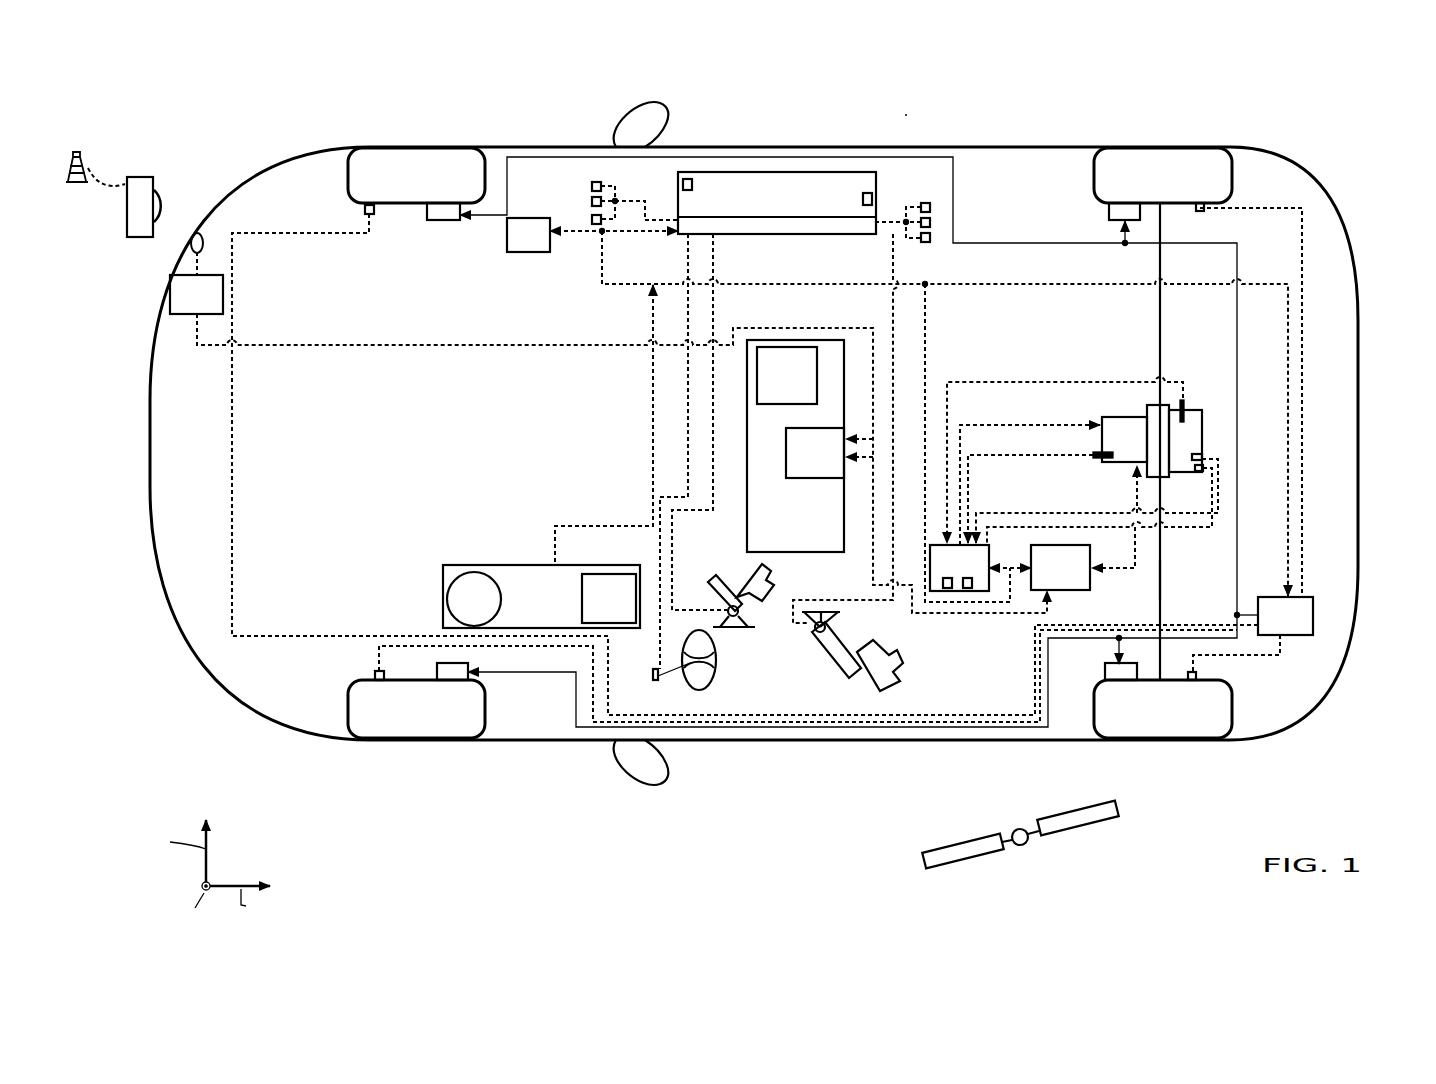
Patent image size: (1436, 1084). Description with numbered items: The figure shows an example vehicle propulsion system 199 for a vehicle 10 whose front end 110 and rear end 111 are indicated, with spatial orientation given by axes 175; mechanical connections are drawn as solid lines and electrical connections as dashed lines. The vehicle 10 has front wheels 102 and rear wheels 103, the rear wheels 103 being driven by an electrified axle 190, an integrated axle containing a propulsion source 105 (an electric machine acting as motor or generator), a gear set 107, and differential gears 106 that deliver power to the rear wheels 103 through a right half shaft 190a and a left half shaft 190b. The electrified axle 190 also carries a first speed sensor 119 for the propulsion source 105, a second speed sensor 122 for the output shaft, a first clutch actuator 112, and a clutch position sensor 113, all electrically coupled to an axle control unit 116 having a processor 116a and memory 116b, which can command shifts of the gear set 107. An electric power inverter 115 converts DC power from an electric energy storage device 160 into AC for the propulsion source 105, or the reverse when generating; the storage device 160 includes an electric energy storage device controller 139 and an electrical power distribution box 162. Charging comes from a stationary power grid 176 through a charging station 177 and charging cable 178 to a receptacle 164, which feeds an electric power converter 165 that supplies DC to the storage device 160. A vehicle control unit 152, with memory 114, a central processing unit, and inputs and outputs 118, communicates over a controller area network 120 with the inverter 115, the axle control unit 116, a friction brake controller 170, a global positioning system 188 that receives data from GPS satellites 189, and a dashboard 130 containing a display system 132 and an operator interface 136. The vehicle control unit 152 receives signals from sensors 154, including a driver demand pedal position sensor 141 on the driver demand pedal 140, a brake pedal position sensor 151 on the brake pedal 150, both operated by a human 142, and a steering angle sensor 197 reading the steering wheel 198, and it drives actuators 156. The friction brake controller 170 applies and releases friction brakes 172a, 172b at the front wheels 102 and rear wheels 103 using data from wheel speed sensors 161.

The vehicle 10 is at (980, 147).
The front wheels 102 is at (420, 157).
The rear wheels 103 is at (1165, 148).
The propulsion source 105 is at (1100, 460).
The differential gears 106 is at (1163, 410).
The gear set 107 is at (1193, 427).
The front end 110 is at (127, 405).
The rear end 111 is at (1408, 178).
The first clutch actuator 112 is at (1200, 471).
The clutch position sensor 113 is at (1199, 452).
The memory 114 is at (680, 181).
The electric power inverter 115 is at (1060, 567).
The axle control unit 116 is at (959, 568).
The processor 116a is at (947, 590).
The memory 116b is at (968, 590).
The inputs and outputs 118 is at (825, 226).
The first speed sensor 119 is at (1128, 465).
The controller area network 120 is at (768, 286).
The second speed sensor 122 is at (1185, 400).
The dashboard 130 is at (462, 565).
The display system 132 is at (474, 599).
The operator interface 136 is at (609, 598).
The electric energy storage device controller 139 is at (787, 375).
The driver demand pedal 140 is at (717, 592).
The driver demand pedal position sensor 141 is at (739, 611).
The human 142 is at (736, 562).
The brake pedal 150 is at (843, 671).
The brake pedal position sensor 151 is at (813, 631).
The vehicle control unit 152 is at (777, 203).
The sensors 154 is at (584, 205).
The actuators 156 is at (937, 228).
The electric energy storage device 160 is at (795, 446).
The wheel speed sensors 161 is at (363, 209).
The electrical power distribution box 162 is at (815, 453).
The receptacle 164 is at (200, 236).
The electric power converter 165 is at (196, 294).
The friction brake controller 170 is at (1285, 616).
The friction brakes 172a is at (435, 221).
The friction brakes 172b is at (1106, 212).
The axes 175 is at (232, 832).
The stationary power grid 176 is at (80, 156).
The charging station 177 is at (145, 177).
The charging cable 178 is at (158, 206).
The global positioning system 188 is at (528, 235).
The GPS satellites 189 is at (1063, 835).
The electrified axle 190 is at (1130, 380).
The right half shaft 190a is at (1162, 338).
The left half shaft 190b is at (1160, 590).
The steering angle sensor 197 is at (652, 676).
The steering wheel 198 is at (710, 676).
The vehicle propulsion system 199 is at (915, 112).